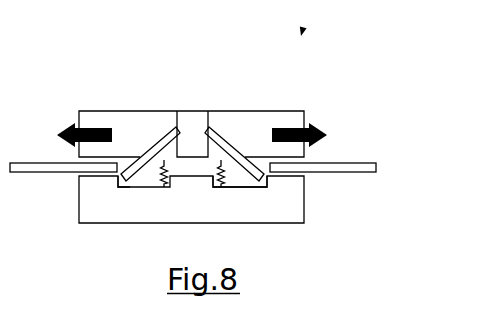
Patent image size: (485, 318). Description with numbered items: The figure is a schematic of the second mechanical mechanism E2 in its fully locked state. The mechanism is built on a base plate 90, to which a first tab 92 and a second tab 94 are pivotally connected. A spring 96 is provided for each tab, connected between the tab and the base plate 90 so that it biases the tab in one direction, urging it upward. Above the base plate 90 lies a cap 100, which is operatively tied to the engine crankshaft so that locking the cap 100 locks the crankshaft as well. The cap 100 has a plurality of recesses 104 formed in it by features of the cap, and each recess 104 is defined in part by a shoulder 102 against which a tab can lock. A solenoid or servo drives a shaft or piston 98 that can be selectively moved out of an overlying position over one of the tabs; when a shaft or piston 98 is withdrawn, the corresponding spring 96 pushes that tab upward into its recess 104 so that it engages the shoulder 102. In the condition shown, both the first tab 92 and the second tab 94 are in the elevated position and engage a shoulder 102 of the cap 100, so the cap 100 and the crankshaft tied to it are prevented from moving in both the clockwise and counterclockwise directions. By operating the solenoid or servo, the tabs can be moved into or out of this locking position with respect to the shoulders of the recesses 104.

The base plate 90 is at (119, 213).
The first tab 92 is at (128, 178).
The second tab 94 is at (224, 186).
The spring 96 is at (166, 184).
The shaft or piston 98 is at (33, 163).
The cap 100 is at (193, 111).
The shoulder 102 is at (170, 149).
The recess 104 is at (178, 112).
The second mechanical mechanism E2 is at (302, 33).